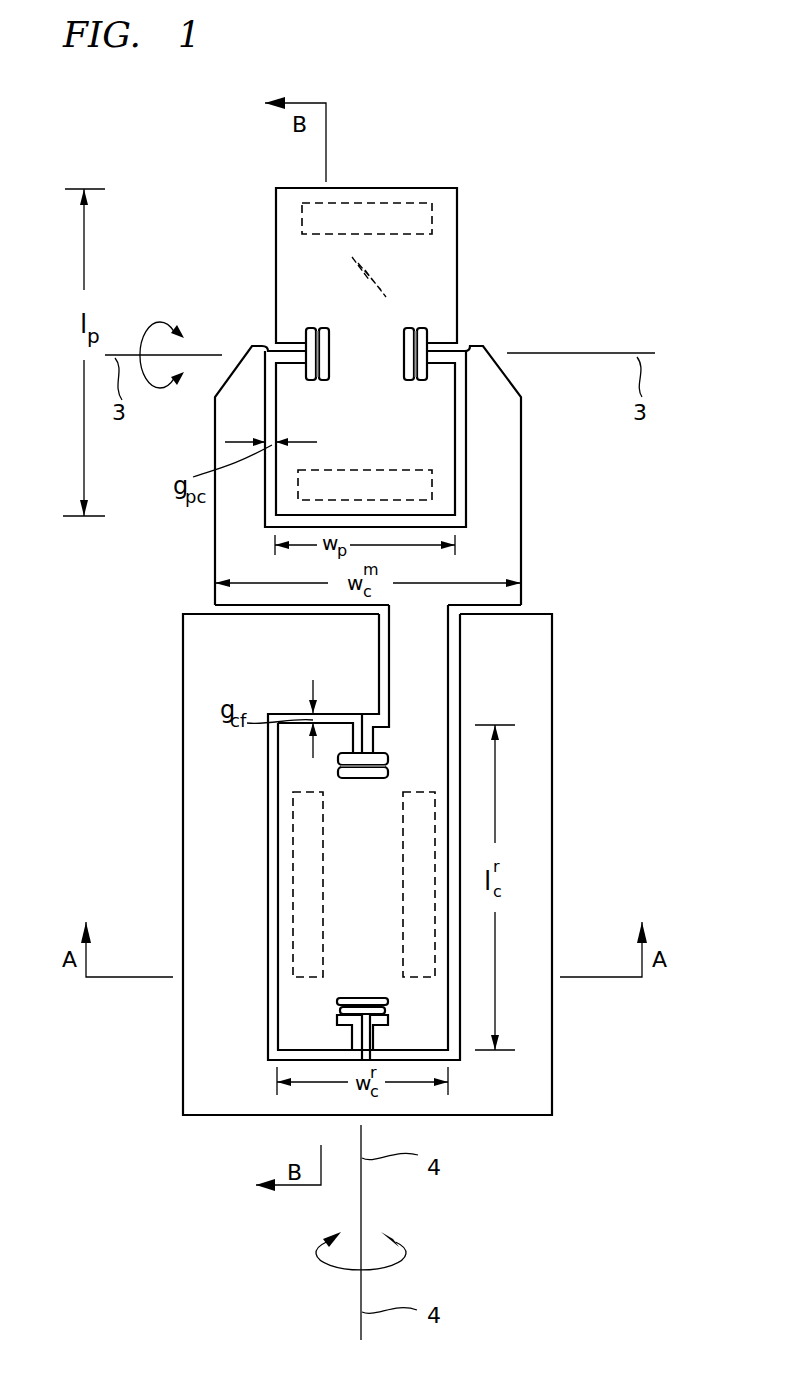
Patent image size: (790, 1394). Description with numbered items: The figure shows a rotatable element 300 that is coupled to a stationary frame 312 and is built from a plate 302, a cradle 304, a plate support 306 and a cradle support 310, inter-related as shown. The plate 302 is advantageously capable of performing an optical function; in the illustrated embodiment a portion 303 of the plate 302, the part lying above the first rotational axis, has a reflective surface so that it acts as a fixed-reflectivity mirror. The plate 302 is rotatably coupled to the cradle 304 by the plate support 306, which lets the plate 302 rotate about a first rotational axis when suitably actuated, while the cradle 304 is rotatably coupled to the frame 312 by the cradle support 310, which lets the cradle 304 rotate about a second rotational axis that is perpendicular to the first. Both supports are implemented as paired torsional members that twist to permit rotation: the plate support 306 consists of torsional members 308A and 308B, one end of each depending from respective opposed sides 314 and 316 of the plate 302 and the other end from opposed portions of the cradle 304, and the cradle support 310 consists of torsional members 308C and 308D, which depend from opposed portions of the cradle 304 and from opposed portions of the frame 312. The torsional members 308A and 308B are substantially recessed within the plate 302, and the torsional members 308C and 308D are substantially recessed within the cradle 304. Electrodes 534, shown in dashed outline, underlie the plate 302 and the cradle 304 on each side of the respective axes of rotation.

The rotatable element 300 is at (614, 217).
The plate 302 is at (297, 253).
The portion of plate 303 is at (437, 255).
The cradle 304 is at (522, 523).
The plate support 306 is at (392, 349).
The torsional member 308A is at (315, 380).
The torsional member 308B is at (415, 380).
The torsional member 308C is at (388, 1022).
The torsional member 308D is at (387, 755).
The cradle support 310 is at (360, 805).
The stationary frame 312 is at (552, 1073).
The side of plate 314 is at (277, 303).
The side of plate 316 is at (458, 298).
The electrodes 534 is at (413, 202).